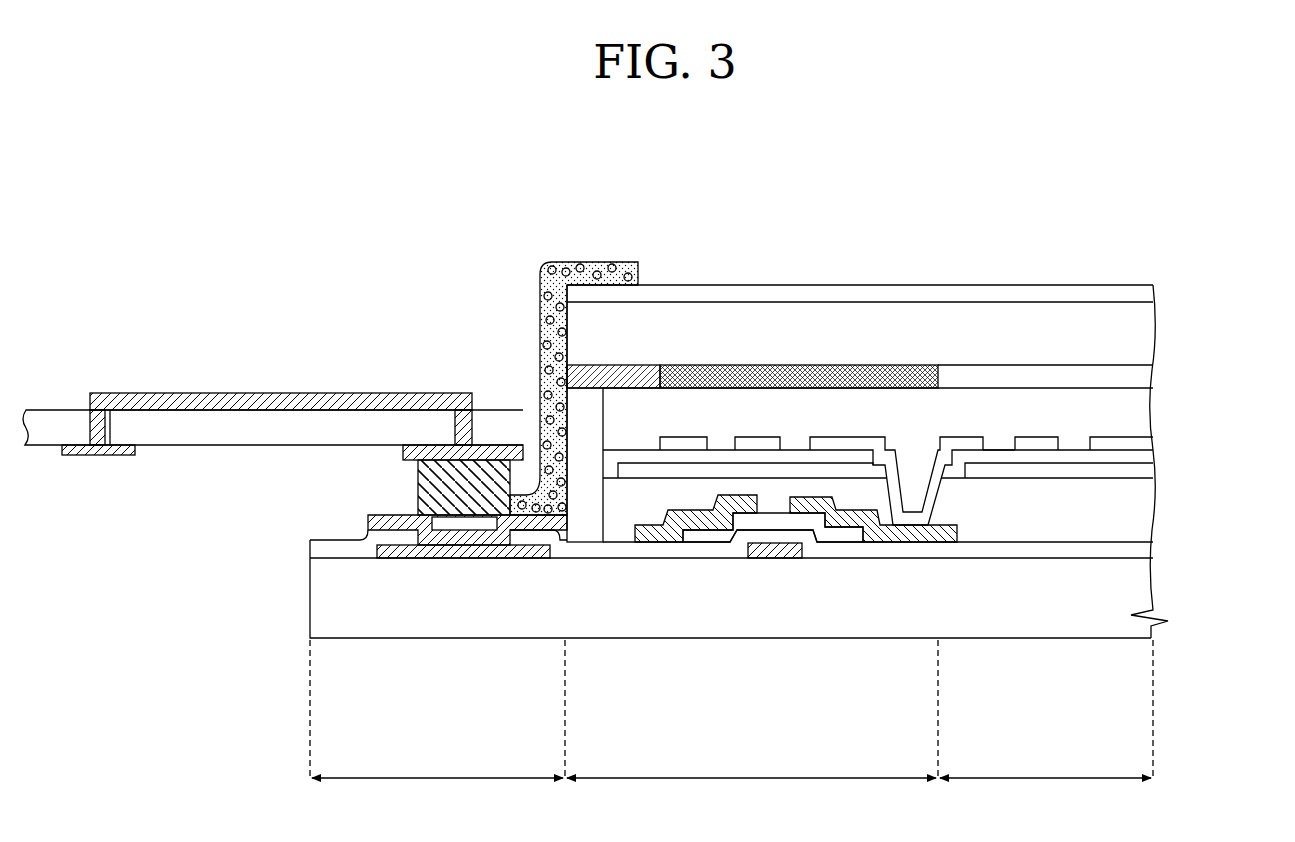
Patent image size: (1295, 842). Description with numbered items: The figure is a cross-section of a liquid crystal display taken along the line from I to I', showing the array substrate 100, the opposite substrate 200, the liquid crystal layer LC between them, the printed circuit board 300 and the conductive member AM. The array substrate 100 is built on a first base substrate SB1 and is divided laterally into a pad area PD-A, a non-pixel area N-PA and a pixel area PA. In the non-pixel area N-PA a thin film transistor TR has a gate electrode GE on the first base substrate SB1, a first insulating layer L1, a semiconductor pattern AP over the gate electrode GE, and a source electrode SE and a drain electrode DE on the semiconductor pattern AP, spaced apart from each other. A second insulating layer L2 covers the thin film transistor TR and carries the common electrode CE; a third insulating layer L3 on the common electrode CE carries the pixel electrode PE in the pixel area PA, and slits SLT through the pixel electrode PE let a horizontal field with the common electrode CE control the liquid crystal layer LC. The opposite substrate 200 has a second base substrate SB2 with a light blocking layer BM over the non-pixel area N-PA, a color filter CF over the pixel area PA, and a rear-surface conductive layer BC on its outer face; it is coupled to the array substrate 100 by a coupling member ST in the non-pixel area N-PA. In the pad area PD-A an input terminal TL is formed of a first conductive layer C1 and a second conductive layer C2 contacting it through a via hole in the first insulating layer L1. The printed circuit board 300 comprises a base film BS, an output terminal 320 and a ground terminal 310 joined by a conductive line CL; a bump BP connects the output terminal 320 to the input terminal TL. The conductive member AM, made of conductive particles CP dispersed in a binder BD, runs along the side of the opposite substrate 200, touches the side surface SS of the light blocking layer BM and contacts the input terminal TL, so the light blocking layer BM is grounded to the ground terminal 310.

The printed circuit board 300 is at (453, 334).
The ground terminal 310 is at (122, 448).
The output terminals 320 is at (423, 443).
The conductive line CL is at (213, 400).
The base film BS is at (307, 418).
The bump BP is at (420, 487).
The conductive member AM is at (635, 205).
The conductive particles CP is at (569, 266).
The binder BD is at (612, 270).
The side surface SS is at (576, 378).
The light blocking layer BM is at (770, 370).
The rear-surface conductive layer BC is at (1137, 293).
The second base substrate SB2 is at (1137, 337).
The opposite substrate 200 is at (1225, 285).
The color filter CF is at (1137, 377).
The liquid crystal layer LC is at (1140, 413).
The slits SLT is at (1000, 433).
The pixel electrode PE is at (1140, 445).
The third insulating layer L3 is at (1137, 460).
The common electrode CE is at (1150, 470).
The array substrate 100 is at (1225, 425).
The second insulating layer L2 is at (1143, 512).
The first insulating layer L1 is at (1145, 549).
The first base substrate SB1 is at (1140, 590).
The second conductive layer C2 is at (462, 548).
The first conductive layer C1 is at (522, 548).
The input terminals TL is at (548, 699).
The coupling member ST is at (583, 545).
The source electrode SE is at (660, 545).
The semiconductor pattern AP is at (712, 535).
The gate electrode GE is at (775, 552).
The drain electrode DE is at (873, 545).
The thin film transistor TR is at (657, 699).
The pad area PD-A is at (437, 722).
The non-pixel area N-PA is at (752, 722).
The pixel area PA is at (1046, 722).
The section line start I is at (22, 472).
The section line end I' is at (1173, 664).